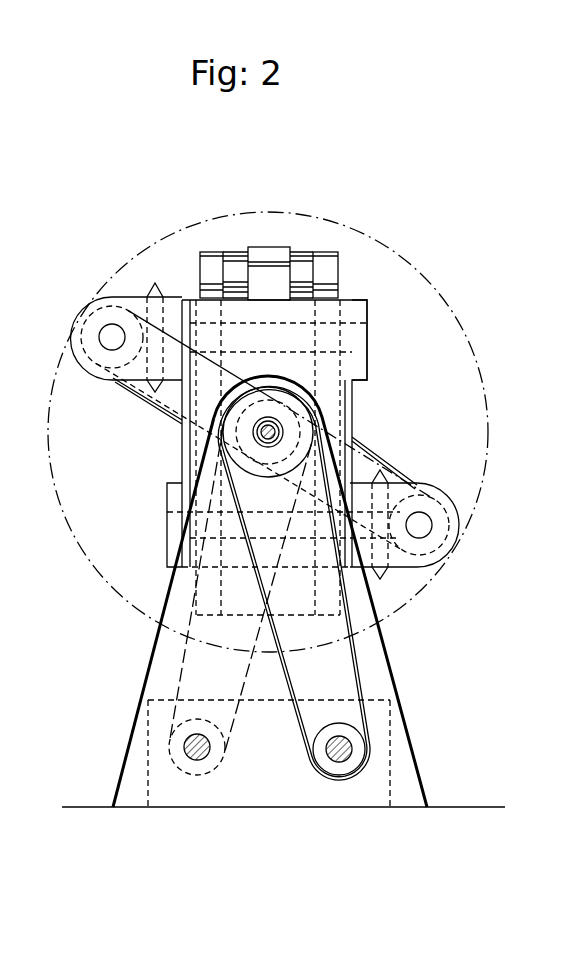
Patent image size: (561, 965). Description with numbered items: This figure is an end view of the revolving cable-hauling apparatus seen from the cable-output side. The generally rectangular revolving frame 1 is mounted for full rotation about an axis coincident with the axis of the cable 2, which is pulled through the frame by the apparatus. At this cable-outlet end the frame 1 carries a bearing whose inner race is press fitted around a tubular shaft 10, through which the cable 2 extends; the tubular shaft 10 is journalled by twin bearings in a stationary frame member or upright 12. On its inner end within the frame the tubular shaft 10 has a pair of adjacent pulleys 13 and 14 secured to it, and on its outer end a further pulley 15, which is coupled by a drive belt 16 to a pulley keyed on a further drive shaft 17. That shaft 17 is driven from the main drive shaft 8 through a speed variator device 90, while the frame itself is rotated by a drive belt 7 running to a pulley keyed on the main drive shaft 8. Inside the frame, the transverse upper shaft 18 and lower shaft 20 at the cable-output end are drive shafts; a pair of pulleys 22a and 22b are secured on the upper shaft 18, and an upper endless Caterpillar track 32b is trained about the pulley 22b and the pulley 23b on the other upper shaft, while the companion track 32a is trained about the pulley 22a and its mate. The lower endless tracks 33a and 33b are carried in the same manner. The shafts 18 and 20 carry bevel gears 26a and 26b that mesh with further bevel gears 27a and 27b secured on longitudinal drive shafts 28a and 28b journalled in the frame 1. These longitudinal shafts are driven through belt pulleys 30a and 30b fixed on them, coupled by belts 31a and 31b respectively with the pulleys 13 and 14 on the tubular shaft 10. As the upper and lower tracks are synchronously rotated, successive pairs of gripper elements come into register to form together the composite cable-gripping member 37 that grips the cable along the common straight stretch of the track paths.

The revolving frame 1 is at (183, 416).
The cable 2 is at (277, 440).
The drive belt 7 is at (177, 688).
The main drive shaft 8 is at (186, 752).
The tubular shaft 10 is at (252, 440).
The stationary frame member 12 is at (388, 684).
The pulley 13 is at (304, 406).
The pulley 14 is at (266, 460).
The pulley 15 is at (238, 468).
The drive belt 16 is at (364, 719).
The further drive shaft 17 is at (347, 762).
The upper shaft 18 is at (303, 348).
The lower shaft 20 is at (200, 541).
The pulley 22a is at (337, 286).
The pulley 22b is at (207, 289).
The pulley 23b is at (240, 447).
The bevel gear 26a is at (157, 290).
The bevel gear 26b is at (384, 498).
The bevel gear 27a is at (90, 318).
The bevel gear 27b is at (438, 498).
The longitudinal drive shaft 28a is at (106, 337).
The longitudinal drive shaft 28b is at (425, 527).
The belt pulley 30a is at (84, 357).
The belt pulley 30b is at (433, 555).
The belt 31a is at (137, 390).
The belt 31b is at (425, 475).
The endless Caterpillar track 32a is at (333, 254).
The endless Caterpillar track 32b is at (213, 250).
The endless track 33a is at (352, 640).
The endless track 33b is at (200, 618).
The composite cable-gripping member 37 is at (273, 256).
The speed variator device 90 is at (257, 788).